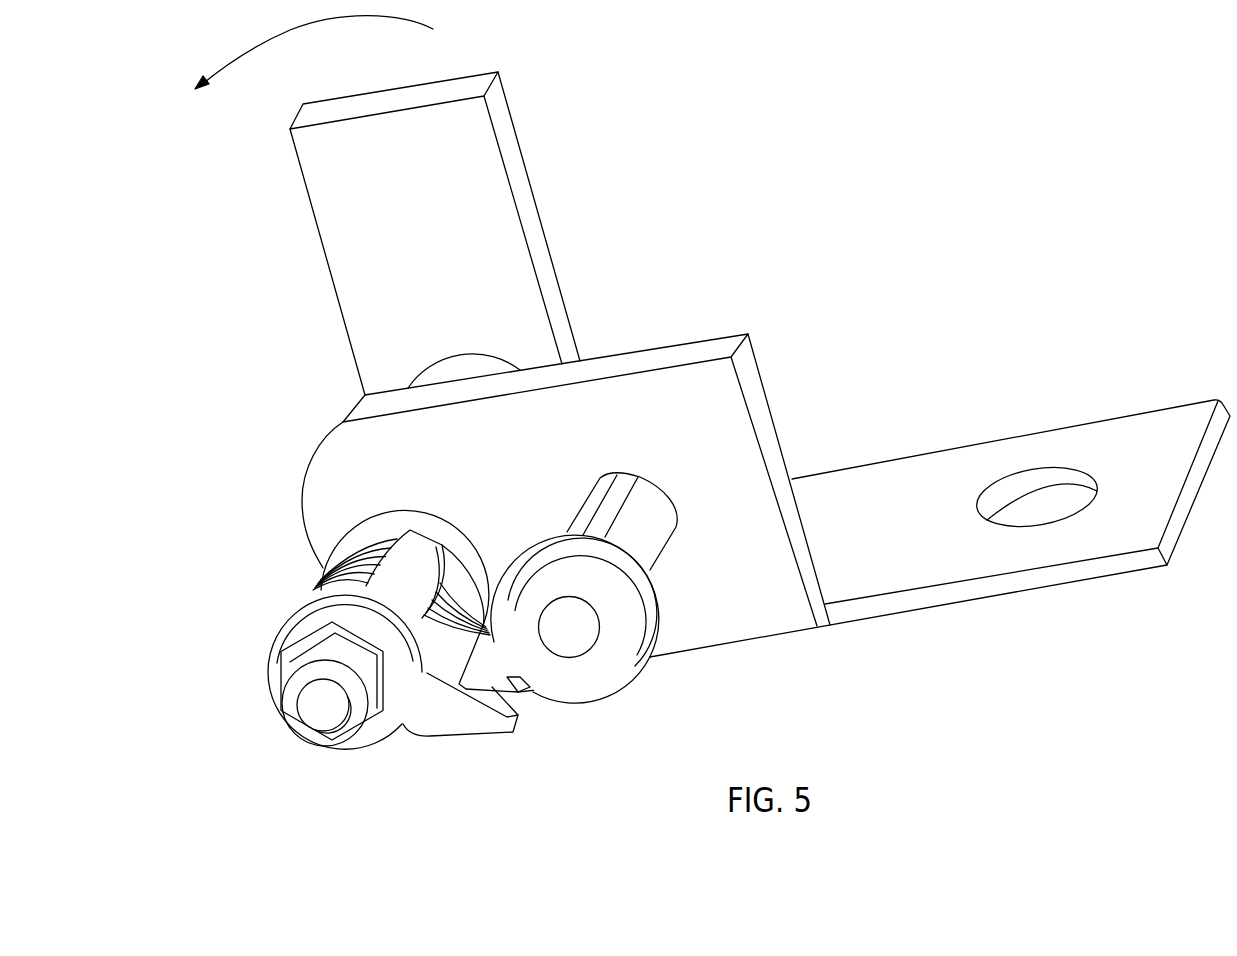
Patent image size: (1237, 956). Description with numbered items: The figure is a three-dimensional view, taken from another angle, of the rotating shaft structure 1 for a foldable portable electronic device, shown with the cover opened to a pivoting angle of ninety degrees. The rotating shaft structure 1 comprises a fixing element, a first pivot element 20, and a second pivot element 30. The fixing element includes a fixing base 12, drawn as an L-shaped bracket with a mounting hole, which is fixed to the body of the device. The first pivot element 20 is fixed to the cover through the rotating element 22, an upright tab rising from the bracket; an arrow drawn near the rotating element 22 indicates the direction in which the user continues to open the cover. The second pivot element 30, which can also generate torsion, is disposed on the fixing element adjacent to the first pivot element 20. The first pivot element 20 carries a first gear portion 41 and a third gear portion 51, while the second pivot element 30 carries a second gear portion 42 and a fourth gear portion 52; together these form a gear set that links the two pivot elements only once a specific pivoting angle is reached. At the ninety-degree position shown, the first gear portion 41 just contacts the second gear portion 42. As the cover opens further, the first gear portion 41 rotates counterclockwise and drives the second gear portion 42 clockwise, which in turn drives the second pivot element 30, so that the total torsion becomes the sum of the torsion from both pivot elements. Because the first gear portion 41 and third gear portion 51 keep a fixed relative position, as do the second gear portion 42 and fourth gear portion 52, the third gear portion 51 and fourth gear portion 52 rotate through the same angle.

The rotating shaft structure 1 is at (212, 207).
The fixing base 12 is at (891, 552).
The first pivot element 20 is at (350, 575).
The rotating element 22 is at (388, 285).
The second pivot element 30 is at (652, 487).
The first gear portion 41 is at (458, 720).
The second gear portion 42 is at (517, 682).
The third gear portion 51 is at (400, 567).
The fourth gear portion 52 is at (525, 687).